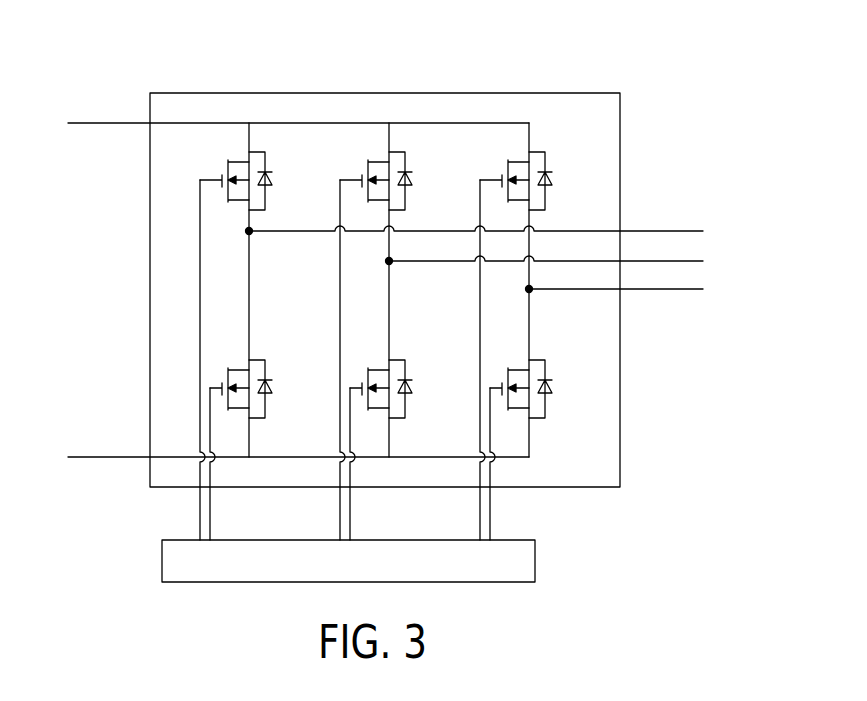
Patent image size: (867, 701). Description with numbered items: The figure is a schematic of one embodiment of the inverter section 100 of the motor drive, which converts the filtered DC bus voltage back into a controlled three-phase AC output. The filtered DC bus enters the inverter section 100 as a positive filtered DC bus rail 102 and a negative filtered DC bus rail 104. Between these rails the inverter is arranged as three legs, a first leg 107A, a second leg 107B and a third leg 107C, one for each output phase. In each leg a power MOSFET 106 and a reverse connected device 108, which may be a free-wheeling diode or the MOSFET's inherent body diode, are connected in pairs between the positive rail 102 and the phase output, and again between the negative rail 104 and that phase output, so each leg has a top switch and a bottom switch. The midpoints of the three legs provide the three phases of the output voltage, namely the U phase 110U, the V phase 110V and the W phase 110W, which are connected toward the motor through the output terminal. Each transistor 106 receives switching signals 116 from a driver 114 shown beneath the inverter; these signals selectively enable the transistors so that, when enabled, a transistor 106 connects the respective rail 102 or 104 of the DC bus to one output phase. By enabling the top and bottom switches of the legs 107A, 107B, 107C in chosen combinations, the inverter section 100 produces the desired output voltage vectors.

The inverter section 100 is at (567, 92).
The positive filtered DC bus rail 102 is at (118, 122).
The negative filtered DC bus rail 104 is at (118, 456).
The first leg 107A is at (248, 86).
The second leg 107B is at (387, 86).
The third leg 107C is at (527, 86).
The power MOSFET 106 is at (206, 172).
The reverse connected device 108 is at (290, 178).
The U phase of the output voltage 110U is at (675, 230).
The V phase of the output voltage 110V is at (688, 260).
The W phase of the output voltage 110W is at (675, 291).
The driver 114 is at (162, 560).
The switching signals 116 is at (208, 507).